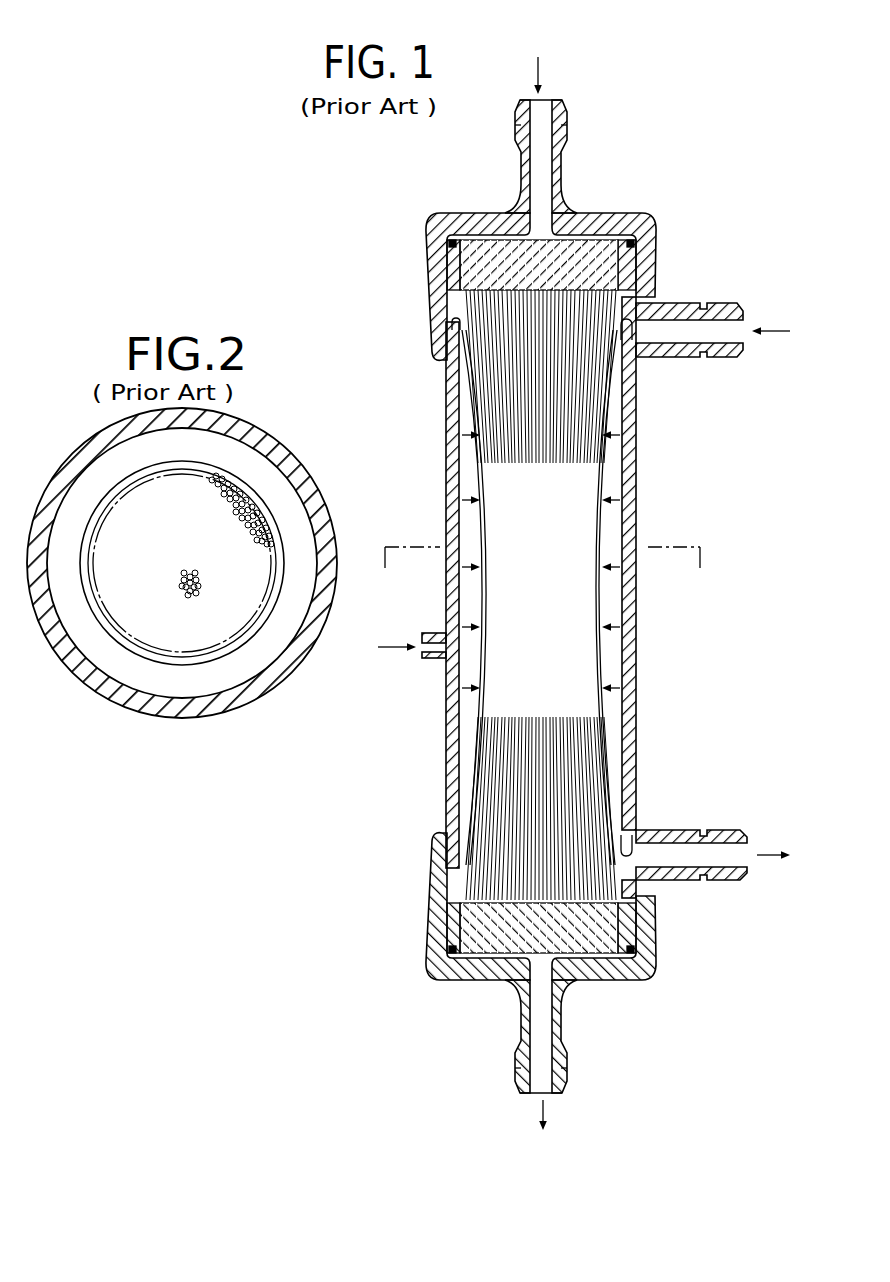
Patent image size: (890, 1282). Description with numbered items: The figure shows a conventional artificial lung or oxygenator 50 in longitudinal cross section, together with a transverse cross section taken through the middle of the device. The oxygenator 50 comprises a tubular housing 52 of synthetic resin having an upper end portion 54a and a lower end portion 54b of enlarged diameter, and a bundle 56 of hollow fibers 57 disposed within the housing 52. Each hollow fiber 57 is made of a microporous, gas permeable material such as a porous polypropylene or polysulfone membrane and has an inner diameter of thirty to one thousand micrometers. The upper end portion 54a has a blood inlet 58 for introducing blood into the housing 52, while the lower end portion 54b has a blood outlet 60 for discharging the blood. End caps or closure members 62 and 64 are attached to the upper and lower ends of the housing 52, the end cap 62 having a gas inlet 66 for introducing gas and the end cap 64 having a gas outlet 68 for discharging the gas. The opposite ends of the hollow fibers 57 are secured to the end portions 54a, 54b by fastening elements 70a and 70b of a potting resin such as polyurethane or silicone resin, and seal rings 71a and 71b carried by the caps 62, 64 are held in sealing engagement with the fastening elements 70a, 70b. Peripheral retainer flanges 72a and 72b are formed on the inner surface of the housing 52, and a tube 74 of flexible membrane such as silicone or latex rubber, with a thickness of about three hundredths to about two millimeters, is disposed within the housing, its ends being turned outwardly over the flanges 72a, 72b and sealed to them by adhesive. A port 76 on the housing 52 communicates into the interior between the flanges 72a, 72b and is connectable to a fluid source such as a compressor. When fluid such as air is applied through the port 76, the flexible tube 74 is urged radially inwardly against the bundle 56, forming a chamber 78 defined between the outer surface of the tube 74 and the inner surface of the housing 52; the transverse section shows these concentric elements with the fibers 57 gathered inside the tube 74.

In FIG. 1, the artificial lung or oxygenator 50 is at (451, 206).
In FIG. 1, the tubular housing 52 is at (640, 466).
In FIG. 2, the tubular housing 52 is at (56, 504).
In FIG. 1, the upper end portion 54a is at (433, 345).
In FIG. 1, the lower end portion 54b is at (440, 857).
In FIG. 1, the bundle of hollow fibers 56 is at (622, 882).
In FIG. 2, the bundle of hollow fibers 56 is at (268, 512).
In FIG. 1, the hollow fibers 57 is at (592, 737).
In FIG. 2, the hollow fibers 57 is at (183, 572).
In FIG. 1, the blood inlet 58 is at (728, 303).
In FIG. 1, the blood outlet 60 is at (745, 882).
In FIG. 1, the end cap 62 is at (566, 196).
In FIG. 1, the end cap 64 is at (512, 1000).
In FIG. 1, the gas inlet 66 is at (563, 108).
In FIG. 1, the gas outlet 68 is at (568, 1085).
In FIG. 1, the fastening element 70a is at (452, 275).
In FIG. 1, the fastening element 70b is at (452, 912).
In FIG. 1, the seal ring 71a is at (640, 242).
In FIG. 1, the seal ring 71b is at (428, 950).
In FIG. 1, the peripheral retainer flange 72a is at (638, 330).
In FIG. 1, the peripheral retainer flange 72b is at (650, 838).
In FIG. 1, the tube of flexible membrane 74 is at (470, 413).
In FIG. 2, the tube of flexible membrane 74 is at (250, 645).
In FIG. 1, the port 76 is at (424, 656).
In FIG. 1, the chamber 78 is at (476, 532).
In FIG. 2, the chamber 78 is at (256, 455).